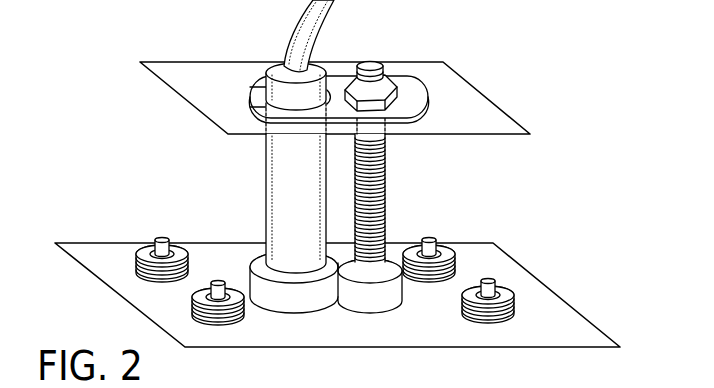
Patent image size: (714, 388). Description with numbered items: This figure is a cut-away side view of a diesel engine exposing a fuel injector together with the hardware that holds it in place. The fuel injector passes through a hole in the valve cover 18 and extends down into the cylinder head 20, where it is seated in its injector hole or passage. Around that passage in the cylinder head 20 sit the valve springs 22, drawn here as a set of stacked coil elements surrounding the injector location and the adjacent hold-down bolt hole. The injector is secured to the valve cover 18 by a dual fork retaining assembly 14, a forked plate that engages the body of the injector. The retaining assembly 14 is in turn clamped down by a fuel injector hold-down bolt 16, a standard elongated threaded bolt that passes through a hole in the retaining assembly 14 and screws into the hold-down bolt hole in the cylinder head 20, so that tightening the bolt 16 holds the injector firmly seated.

The dual fork retaining assembly 14 is at (433, 90).
The fuel injector hold-down bolt 16 is at (382, 187).
The valve cover 18 is at (190, 90).
The cylinder head 20 is at (560, 302).
The valve springs 22 is at (245, 327).